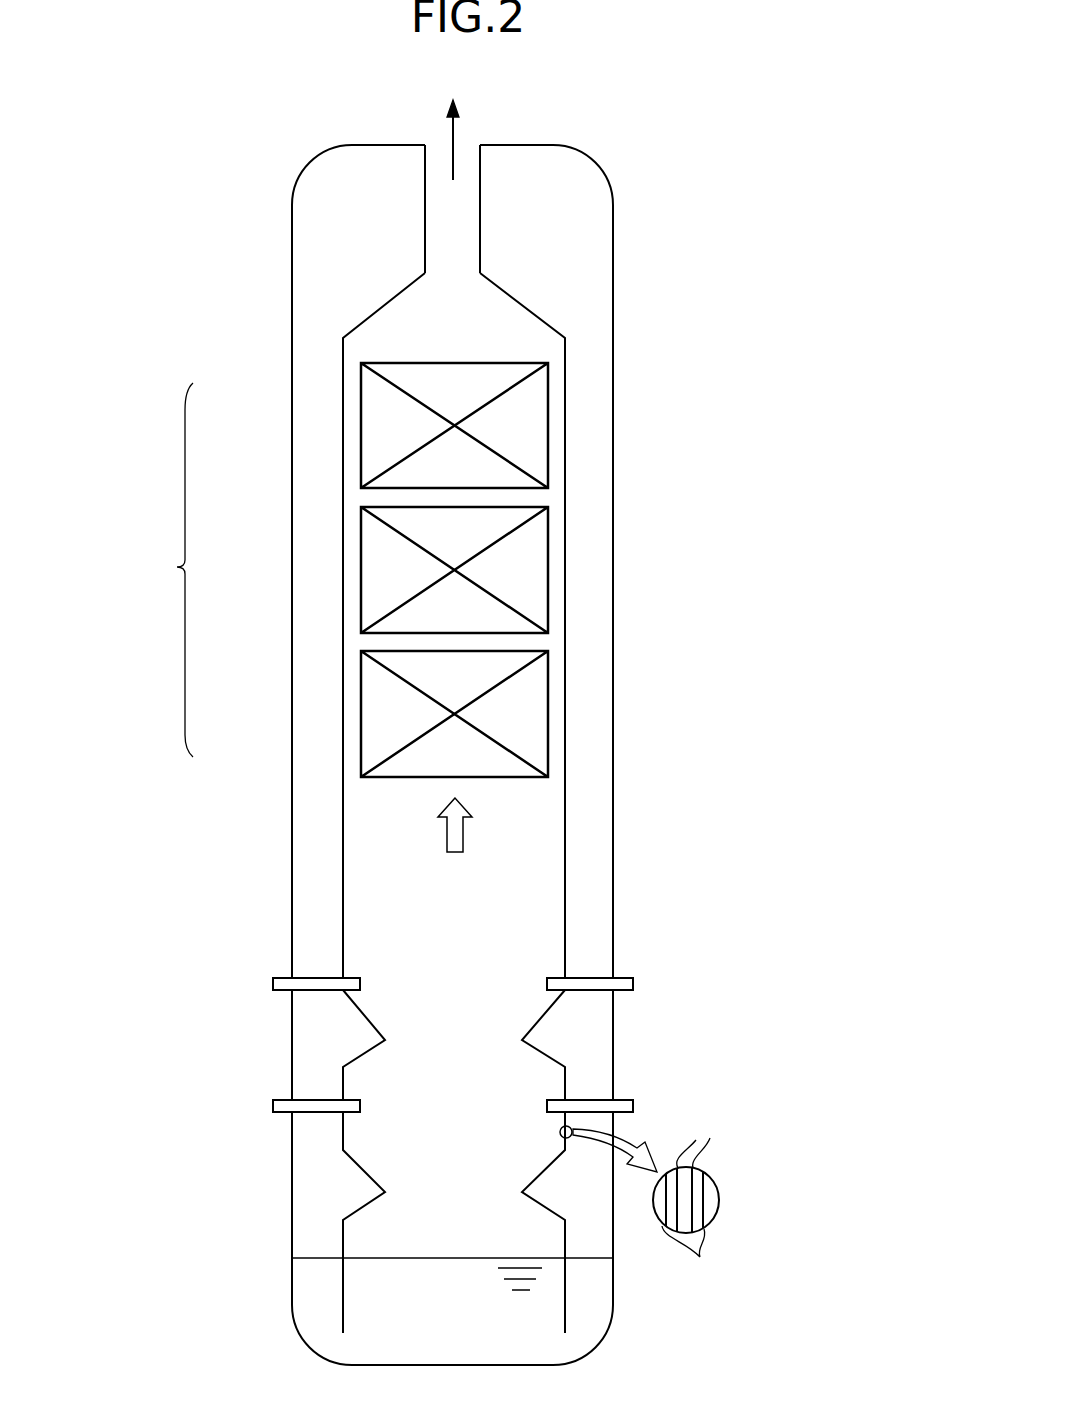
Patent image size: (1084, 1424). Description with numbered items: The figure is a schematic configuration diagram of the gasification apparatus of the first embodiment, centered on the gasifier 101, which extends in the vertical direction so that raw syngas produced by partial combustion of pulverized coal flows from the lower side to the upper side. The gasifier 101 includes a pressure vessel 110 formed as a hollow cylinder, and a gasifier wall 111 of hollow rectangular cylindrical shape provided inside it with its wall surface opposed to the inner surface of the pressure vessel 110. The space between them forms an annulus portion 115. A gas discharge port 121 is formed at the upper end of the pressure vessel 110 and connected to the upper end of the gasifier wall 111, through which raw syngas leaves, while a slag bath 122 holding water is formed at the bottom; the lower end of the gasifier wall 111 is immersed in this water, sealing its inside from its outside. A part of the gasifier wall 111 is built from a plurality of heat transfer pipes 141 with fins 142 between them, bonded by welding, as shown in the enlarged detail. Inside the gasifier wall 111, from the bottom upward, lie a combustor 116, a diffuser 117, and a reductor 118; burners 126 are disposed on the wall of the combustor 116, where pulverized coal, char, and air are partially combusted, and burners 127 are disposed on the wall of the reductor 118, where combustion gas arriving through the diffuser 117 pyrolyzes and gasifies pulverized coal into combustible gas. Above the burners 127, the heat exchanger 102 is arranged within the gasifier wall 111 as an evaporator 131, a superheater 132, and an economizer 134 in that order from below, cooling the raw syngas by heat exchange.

The gasifier 101 is at (180, 182).
The heat exchanger 102 is at (337, 570).
The pressure vessel 110 is at (613, 813).
The gasifier wall 111 is at (565, 907).
The annulus portion 115 is at (592, 732).
The combustor 116 is at (460, 1143).
The diffuser 117 is at (460, 1045).
The reductor 118 is at (460, 945).
The gas discharge port 121 is at (470, 145).
The slag bath 122 is at (580, 1345).
The burners 126 is at (633, 1105).
The burners 127 is at (633, 982).
The evaporator 131 is at (361, 735).
The superheater 132 is at (361, 572).
The economizer 134 is at (361, 415).
The heat transfer pipes 141 is at (644, 1173).
The fins 142 is at (690, 1255).